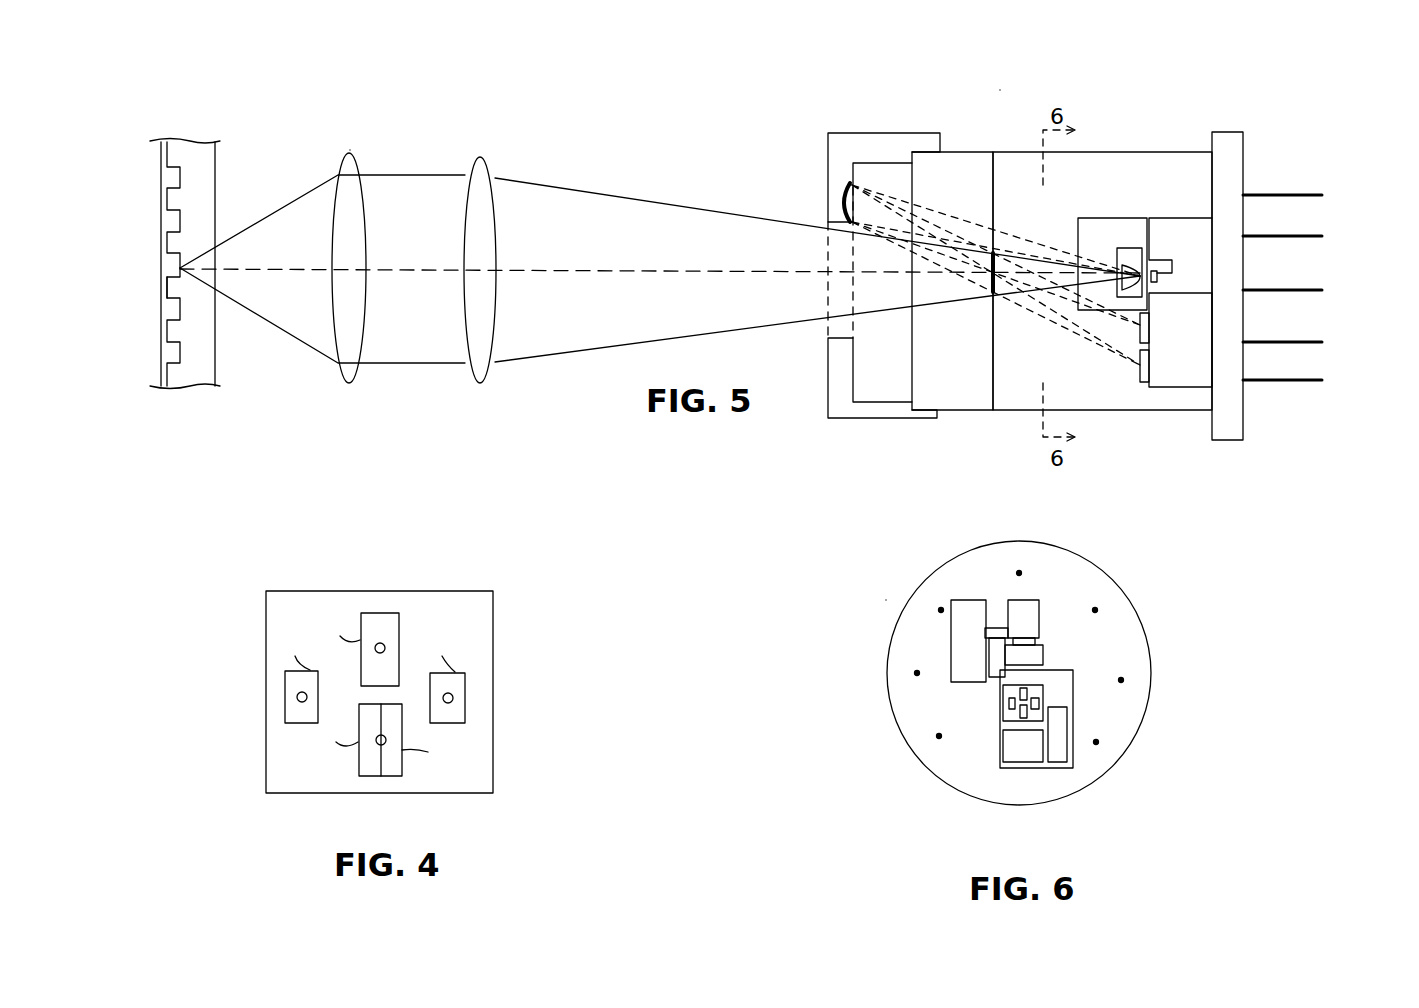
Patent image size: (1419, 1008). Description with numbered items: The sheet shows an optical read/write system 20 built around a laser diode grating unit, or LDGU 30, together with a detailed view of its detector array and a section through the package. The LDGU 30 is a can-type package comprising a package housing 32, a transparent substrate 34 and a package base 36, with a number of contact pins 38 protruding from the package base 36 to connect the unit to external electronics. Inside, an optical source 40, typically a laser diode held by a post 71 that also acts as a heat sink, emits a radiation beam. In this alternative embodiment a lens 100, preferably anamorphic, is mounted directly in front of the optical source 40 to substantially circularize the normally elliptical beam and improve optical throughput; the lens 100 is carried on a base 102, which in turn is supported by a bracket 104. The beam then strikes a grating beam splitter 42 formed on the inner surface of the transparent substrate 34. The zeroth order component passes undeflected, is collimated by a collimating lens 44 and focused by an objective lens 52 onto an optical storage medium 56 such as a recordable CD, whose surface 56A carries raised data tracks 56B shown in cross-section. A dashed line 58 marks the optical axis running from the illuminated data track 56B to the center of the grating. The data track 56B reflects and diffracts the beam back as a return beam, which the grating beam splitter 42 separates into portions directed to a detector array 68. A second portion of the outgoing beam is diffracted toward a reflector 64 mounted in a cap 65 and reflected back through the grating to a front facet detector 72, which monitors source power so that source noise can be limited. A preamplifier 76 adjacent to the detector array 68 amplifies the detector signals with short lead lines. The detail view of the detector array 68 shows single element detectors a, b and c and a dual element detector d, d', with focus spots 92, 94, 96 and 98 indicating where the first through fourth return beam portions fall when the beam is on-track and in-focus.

In FIG. 5, the system 20 is at (459, 73).
In FIG. 5, the LDGU 30 is at (1010, 74).
In FIG. 6, the LDGU 30 is at (886, 568).
In FIG. 5, the package housing 32 is at (1122, 153).
In FIG. 6, the package housing 32 is at (965, 552).
In FIG. 5, the transparent substrate 34 is at (968, 152).
In FIG. 5, the package base 36 is at (1240, 132).
In FIG. 5, the contact pins 38 is at (1322, 236).
In FIG. 6, the contact pins 38 is at (1096, 608).
In FIG. 5, the optical source 40 is at (1160, 272).
In FIG. 5, the grating beam splitter 42 is at (993, 292).
In FIG. 5, the collimating lens 44 is at (480, 160).
In FIG. 5, the objective lens 52 is at (349, 156).
In FIG. 5, the optical storage medium 56 is at (144, 124).
In FIG. 5, the surface 56A is at (165, 288).
In FIG. 5, the data track 56B is at (178, 267).
In FIG. 5, the optical axis 58 is at (655, 268).
In FIG. 5, the reflector 64 is at (845, 192).
In FIG. 5, the cap 65 is at (875, 133).
In FIG. 5, the detector array 68 is at (1147, 330).
In FIG. 4, the detector array 68 is at (330, 591).
In FIG. 6, the detector array 68 is at (1000, 715).
In FIG. 6, the post 71 is at (1040, 610).
In FIG. 5, the front facet detector 72 is at (1140, 373).
In FIG. 6, the front facet detector 72 is at (1003, 750).
In FIG. 6, the preamplifier 76 is at (1068, 725).
In FIG. 4, the focus spot 92 is at (290, 703).
In FIG. 4, the focus spot 94 is at (455, 698).
In FIG. 4, the focus spot 96 is at (385, 645).
In FIG. 4, the focus spot 98 is at (380, 745).
In FIG. 5, the lens 100 is at (1137, 262).
In FIG. 6, the lens 100 is at (1043, 655).
In FIG. 5, the base 102 is at (1119, 252).
In FIG. 6, the base 102 is at (993, 628).
In FIG. 5, the bracket 104 is at (1078, 248).
In FIG. 6, the bracket 104 is at (951, 672).